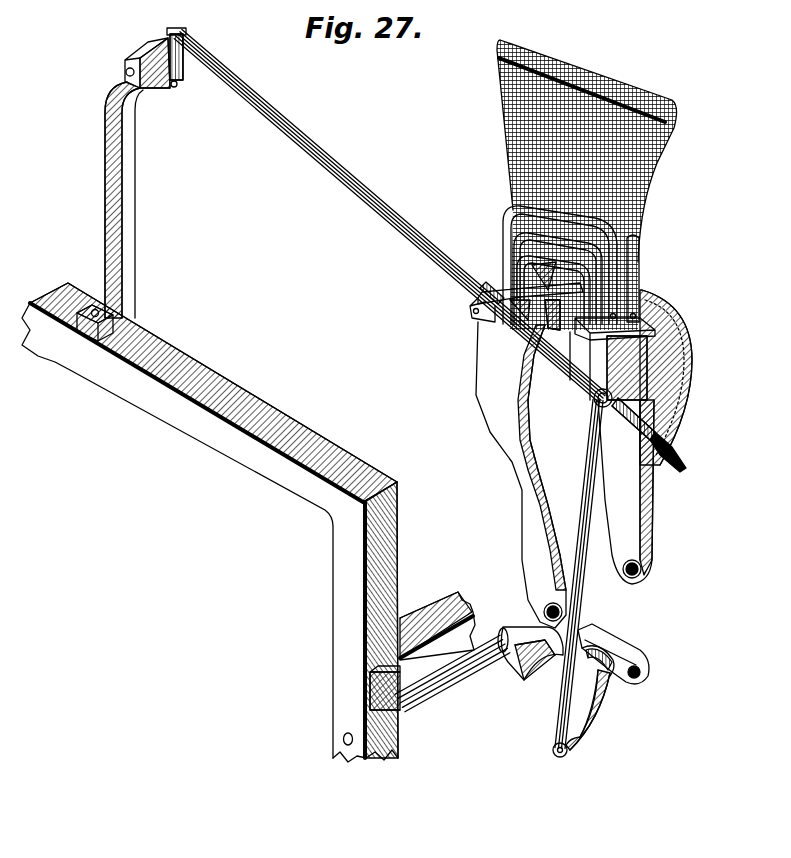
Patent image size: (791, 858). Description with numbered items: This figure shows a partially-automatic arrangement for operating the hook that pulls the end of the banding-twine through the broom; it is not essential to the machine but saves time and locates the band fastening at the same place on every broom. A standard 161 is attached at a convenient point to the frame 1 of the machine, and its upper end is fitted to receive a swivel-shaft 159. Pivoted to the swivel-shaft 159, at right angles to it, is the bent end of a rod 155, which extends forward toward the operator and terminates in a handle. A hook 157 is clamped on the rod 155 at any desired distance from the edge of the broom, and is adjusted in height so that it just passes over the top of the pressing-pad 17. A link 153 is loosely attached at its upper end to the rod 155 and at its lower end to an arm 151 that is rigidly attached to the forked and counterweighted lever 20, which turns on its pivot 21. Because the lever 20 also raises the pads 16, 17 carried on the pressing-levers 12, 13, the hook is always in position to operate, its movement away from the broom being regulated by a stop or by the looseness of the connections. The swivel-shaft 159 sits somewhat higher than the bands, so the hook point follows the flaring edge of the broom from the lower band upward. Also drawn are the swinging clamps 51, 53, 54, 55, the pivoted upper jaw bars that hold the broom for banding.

The frame 1 is at (222, 380).
The pressing-lever 12 is at (665, 328).
The pressing-lever 13 is at (521, 475).
The pressing-pad 16 is at (646, 306).
The pressing-pad 17 is at (542, 307).
The forked and counterweighted lever 20 is at (508, 634).
The pivot 21 is at (452, 679).
The swinging clamp 51 is at (515, 266).
The swinging clamp 53 is at (512, 246).
The swinging clamp 54 is at (636, 260).
The swinging clamp 55 is at (506, 218).
The arm 151 is at (590, 722).
The link 153 is at (582, 628).
The rod 155 is at (286, 125).
The hook 157 is at (543, 284).
The swivel-shaft 159 is at (126, 72).
The standard 161 is at (146, 57).